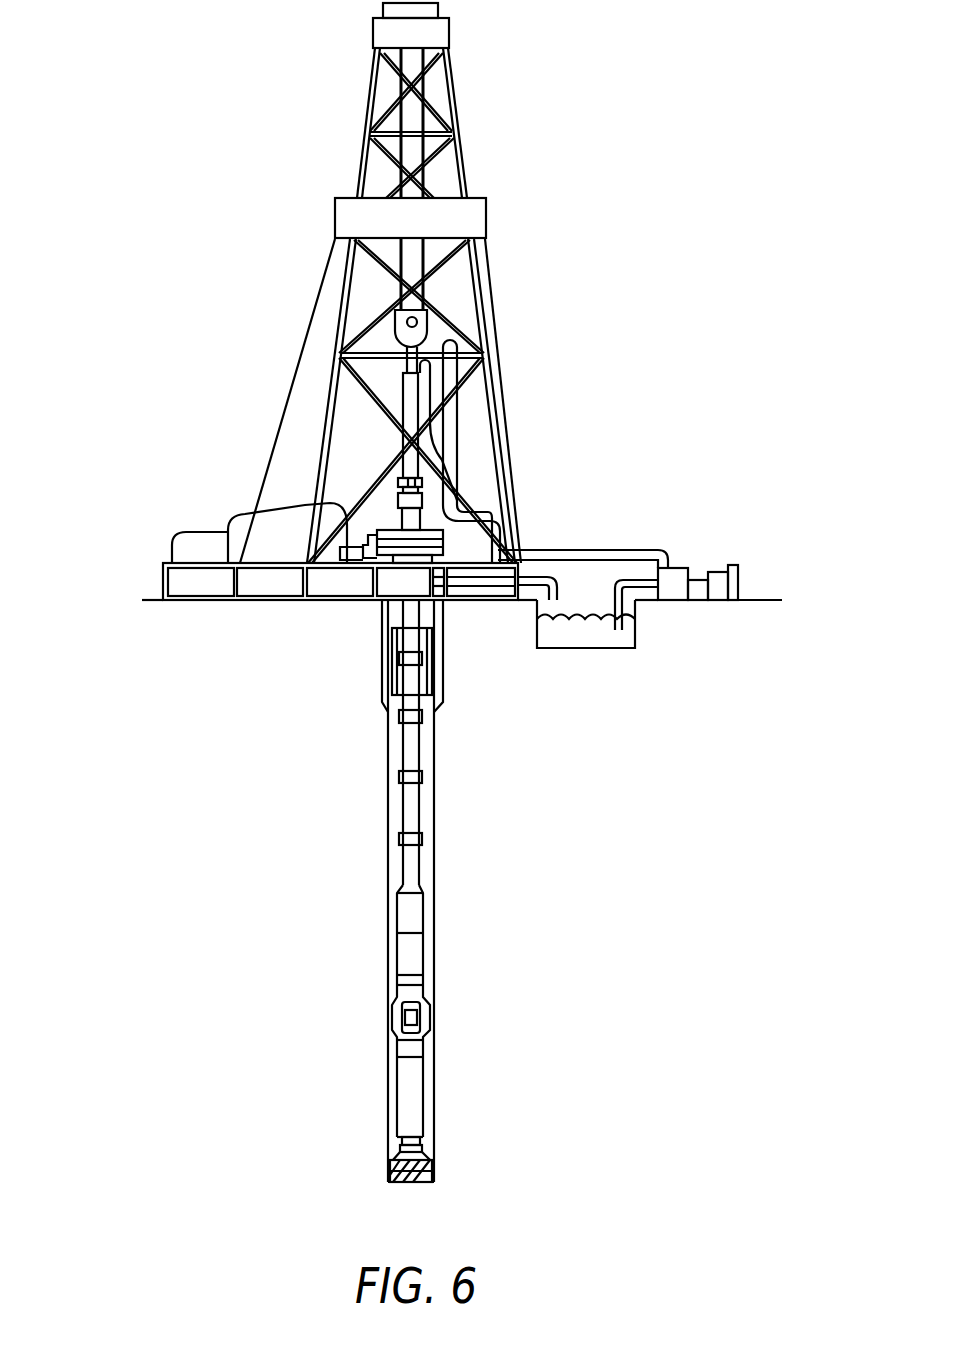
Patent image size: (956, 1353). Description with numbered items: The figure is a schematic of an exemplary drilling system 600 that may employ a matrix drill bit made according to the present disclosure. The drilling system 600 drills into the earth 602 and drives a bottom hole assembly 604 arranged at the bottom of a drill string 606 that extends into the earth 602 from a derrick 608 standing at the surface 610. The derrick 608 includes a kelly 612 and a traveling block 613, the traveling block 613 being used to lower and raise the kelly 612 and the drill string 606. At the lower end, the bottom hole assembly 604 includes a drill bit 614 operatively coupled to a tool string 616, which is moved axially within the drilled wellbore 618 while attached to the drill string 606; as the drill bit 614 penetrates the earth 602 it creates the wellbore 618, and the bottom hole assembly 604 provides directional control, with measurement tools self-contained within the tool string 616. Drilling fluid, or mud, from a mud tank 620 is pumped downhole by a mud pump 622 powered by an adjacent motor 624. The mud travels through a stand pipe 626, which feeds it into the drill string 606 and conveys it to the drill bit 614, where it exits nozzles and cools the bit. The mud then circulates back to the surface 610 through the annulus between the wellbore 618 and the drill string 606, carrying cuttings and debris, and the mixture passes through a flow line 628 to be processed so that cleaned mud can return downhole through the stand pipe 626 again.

The drilling system 600 is at (630, 207).
The earth 602 is at (260, 682).
The bottom hole assembly 604 is at (303, 1011).
The drill string 606 is at (410, 797).
The derrick 608 is at (337, 332).
The surface 610 is at (153, 599).
The kelly 612 is at (410, 400).
The traveling block 613 is at (422, 322).
The drill bit 614 is at (433, 1170).
The tool string 616 is at (412, 1080).
The wellbore 618 is at (387, 742).
The mud tank 620 is at (577, 648).
The mud pump 622 is at (670, 580).
The motor 624 is at (740, 594).
The stand pipe 626 is at (460, 447).
The flow line 628 is at (557, 583).